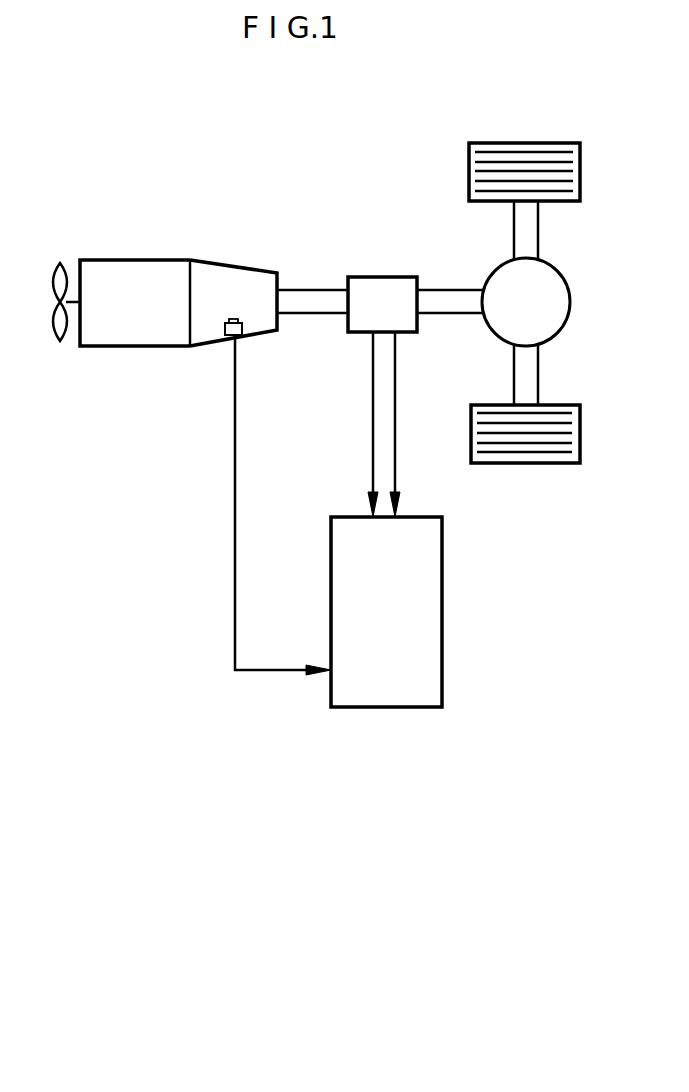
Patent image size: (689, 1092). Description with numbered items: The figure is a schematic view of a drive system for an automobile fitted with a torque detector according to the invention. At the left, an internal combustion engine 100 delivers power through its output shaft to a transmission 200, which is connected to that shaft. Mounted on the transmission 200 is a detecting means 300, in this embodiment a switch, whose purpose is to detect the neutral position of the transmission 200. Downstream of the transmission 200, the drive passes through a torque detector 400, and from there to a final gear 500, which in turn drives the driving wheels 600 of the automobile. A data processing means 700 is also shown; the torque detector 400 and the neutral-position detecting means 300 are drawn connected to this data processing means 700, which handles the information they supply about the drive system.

The internal combustion engine 100 is at (152, 269).
The transmission 200 is at (238, 274).
The detecting means 300 is at (243, 336).
The torque detector 400 is at (389, 283).
The final gear 500 is at (557, 282).
The driving wheels 600 is at (571, 445).
The data processing means 700 is at (440, 547).